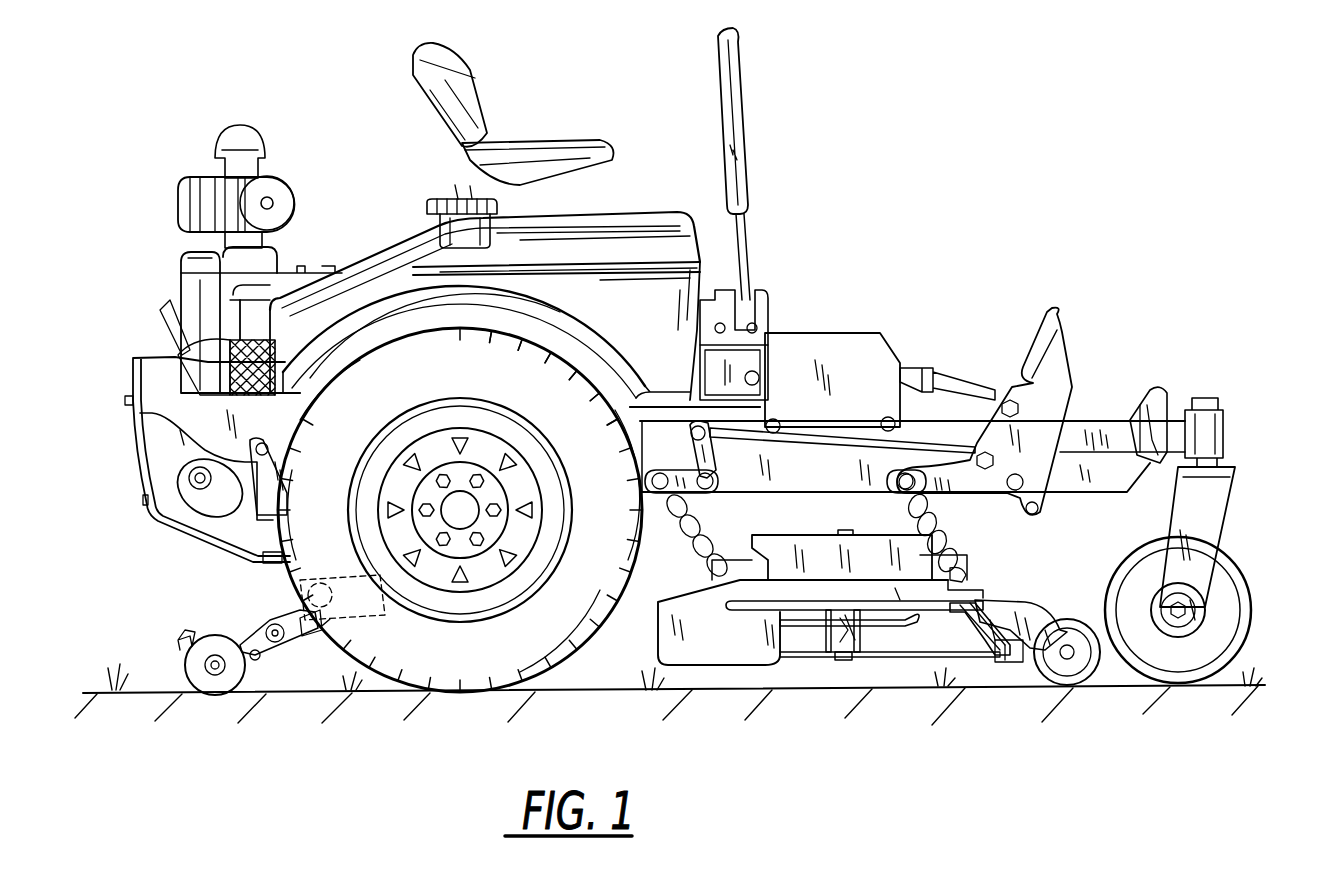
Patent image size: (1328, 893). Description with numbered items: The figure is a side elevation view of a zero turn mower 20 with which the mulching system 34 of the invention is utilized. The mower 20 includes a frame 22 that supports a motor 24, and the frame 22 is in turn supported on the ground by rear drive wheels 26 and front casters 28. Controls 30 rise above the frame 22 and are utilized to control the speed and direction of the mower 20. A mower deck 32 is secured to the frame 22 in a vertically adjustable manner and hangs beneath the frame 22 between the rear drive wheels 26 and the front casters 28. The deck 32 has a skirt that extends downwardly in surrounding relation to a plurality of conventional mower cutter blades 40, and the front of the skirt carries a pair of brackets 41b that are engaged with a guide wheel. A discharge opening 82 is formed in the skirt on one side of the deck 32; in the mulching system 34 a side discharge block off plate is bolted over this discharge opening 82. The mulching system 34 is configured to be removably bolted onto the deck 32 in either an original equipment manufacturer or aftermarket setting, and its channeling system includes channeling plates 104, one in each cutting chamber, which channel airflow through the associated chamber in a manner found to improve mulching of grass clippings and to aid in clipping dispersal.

The zero turn mower 20 is at (872, 262).
The frame 22 is at (612, 230).
The motor 24 is at (280, 294).
The rear drive wheels 26 is at (392, 665).
The front casters 28 is at (1245, 572).
The controls 30 is at (742, 100).
The mower deck 32 is at (738, 645).
The mulching system 34 is at (882, 636).
The mower cutter blades 40 is at (872, 650).
The brackets 41b is at (1030, 640).
The discharge opening 82 is at (968, 645).
The channeling plates 104 is at (820, 622).